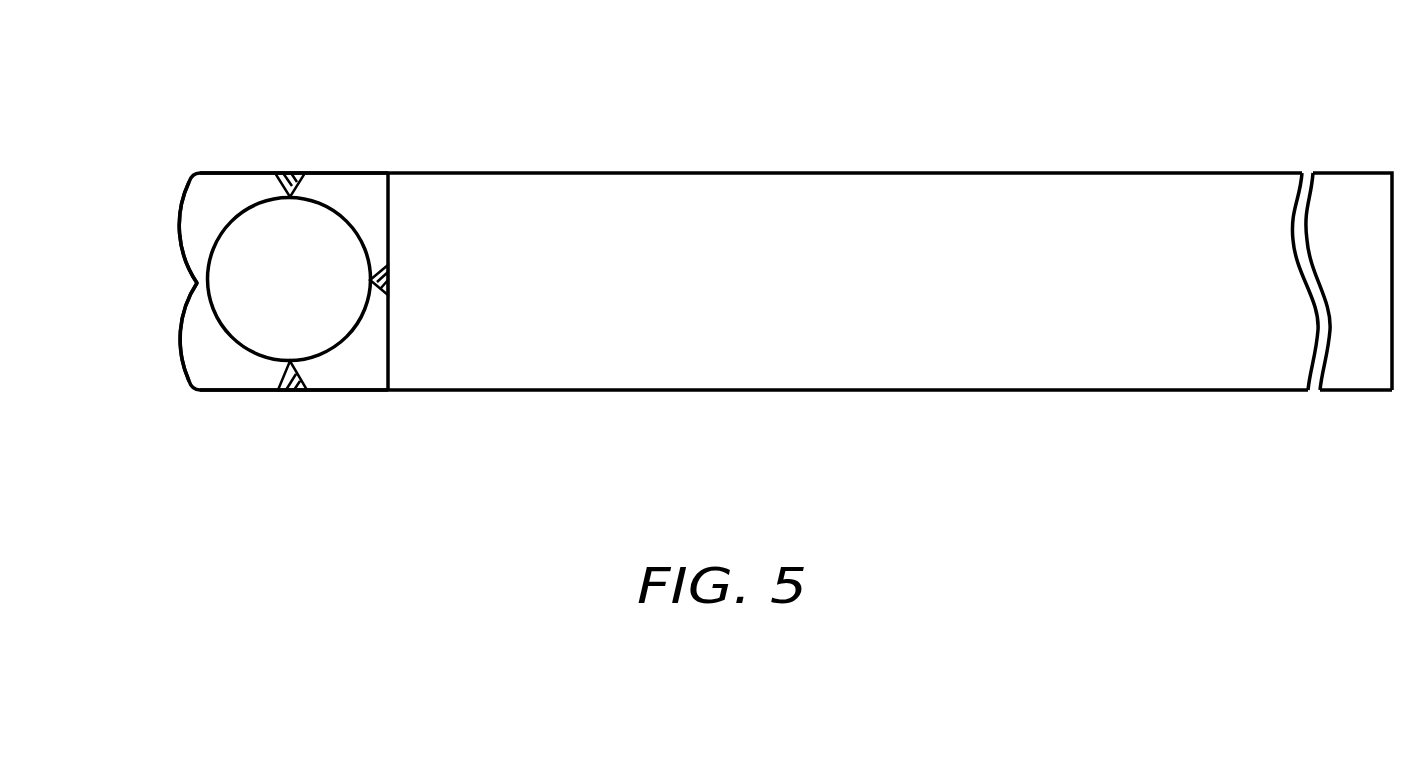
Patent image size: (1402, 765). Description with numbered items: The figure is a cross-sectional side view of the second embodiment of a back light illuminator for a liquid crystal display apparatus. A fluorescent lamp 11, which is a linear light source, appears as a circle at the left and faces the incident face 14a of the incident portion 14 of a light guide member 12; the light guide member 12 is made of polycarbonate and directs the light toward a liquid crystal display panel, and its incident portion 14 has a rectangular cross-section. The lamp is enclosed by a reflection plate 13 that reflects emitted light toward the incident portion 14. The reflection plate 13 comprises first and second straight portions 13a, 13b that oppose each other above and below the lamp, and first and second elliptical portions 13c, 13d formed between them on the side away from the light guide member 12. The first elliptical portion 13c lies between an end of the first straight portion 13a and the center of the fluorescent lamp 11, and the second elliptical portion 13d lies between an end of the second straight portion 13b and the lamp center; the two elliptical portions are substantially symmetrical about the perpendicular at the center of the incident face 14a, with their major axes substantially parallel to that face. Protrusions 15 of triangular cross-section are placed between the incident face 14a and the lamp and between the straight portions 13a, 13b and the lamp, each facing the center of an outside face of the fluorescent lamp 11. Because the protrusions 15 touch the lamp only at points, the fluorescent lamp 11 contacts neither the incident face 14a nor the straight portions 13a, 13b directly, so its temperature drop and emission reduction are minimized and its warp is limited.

The fluorescent lamp 11 is at (320, 353).
The light guide member 12 is at (528, 390).
The reflection plate 13 is at (197, 153).
The first straight portion 13a is at (253, 172).
The second straight portion 13b is at (240, 392).
The first elliptical portion 13c is at (181, 203).
The second elliptical portion 13d is at (181, 335).
The incident portion 14 is at (433, 207).
The incident face 14a is at (388, 345).
The protrusions 15 is at (300, 188).